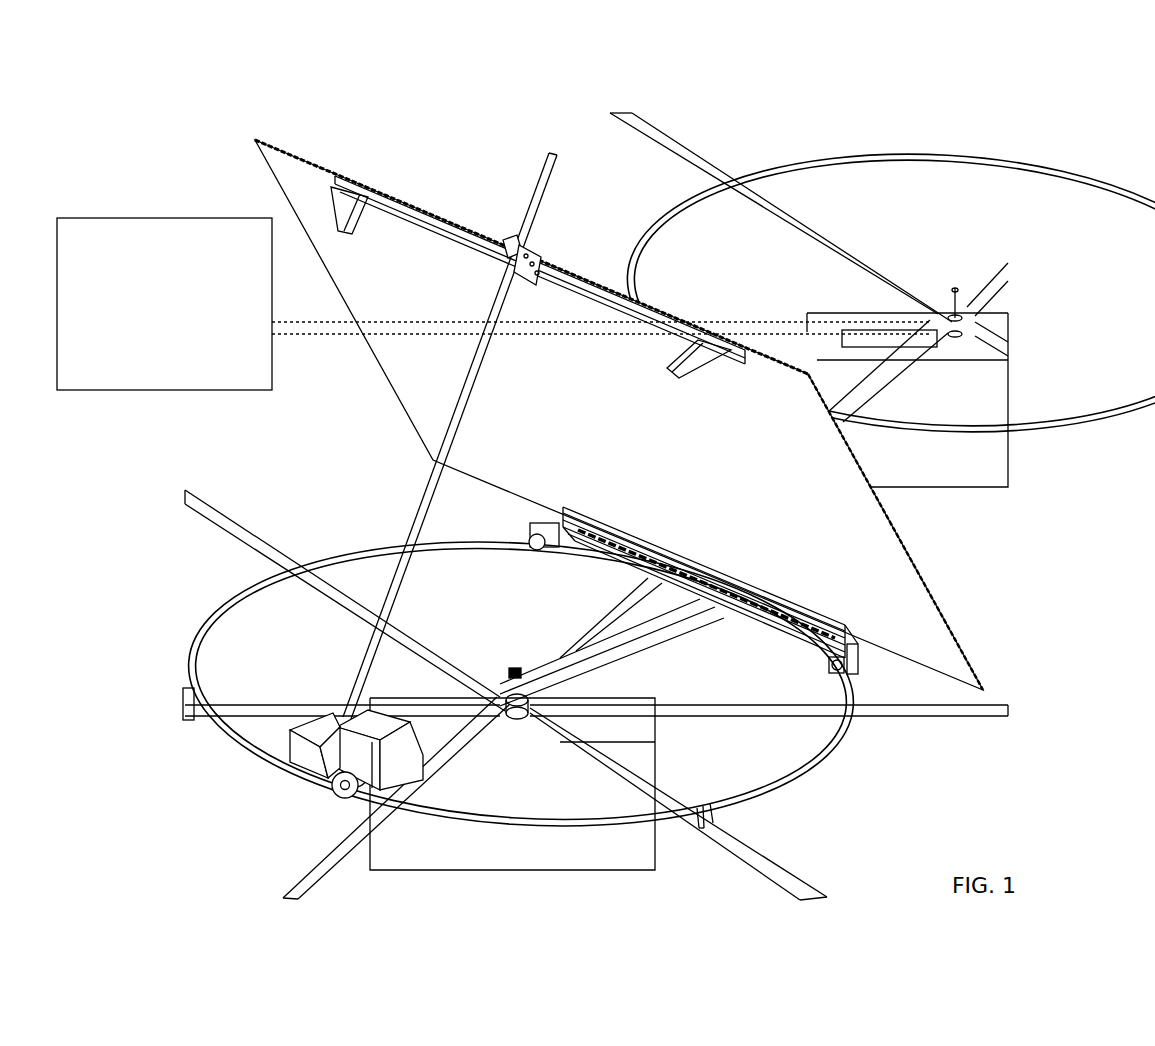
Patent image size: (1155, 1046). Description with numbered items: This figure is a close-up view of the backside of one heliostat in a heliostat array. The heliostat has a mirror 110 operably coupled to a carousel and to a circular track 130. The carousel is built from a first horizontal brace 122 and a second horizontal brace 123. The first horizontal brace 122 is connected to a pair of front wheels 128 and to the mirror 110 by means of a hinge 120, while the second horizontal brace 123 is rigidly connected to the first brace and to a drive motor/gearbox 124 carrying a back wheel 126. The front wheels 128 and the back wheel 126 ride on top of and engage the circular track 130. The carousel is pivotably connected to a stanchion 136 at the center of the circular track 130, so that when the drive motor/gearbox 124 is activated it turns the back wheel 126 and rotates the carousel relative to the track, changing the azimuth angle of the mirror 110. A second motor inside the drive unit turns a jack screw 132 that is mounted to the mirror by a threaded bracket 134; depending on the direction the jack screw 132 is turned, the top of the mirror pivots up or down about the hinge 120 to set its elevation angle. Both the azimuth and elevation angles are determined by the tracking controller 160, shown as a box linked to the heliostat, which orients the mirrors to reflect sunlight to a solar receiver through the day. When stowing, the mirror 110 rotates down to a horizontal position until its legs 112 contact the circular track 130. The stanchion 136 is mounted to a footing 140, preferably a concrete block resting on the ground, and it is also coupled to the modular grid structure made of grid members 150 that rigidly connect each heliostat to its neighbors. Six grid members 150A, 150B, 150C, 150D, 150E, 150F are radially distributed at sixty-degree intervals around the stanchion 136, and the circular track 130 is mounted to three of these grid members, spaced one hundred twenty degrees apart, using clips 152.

The mirror 110 is at (392, 297).
The legs 112 is at (335, 218).
The hinge 120 is at (810, 598).
The first horizontal brace 122 is at (762, 630).
The second horizontal brace 123 is at (603, 650).
The drive motor/gearbox 124 is at (313, 731).
The back wheel 126 is at (330, 793).
The front wheels 128 is at (522, 536).
The circular track 130 is at (227, 607).
The jack screw 132 is at (427, 483).
The threaded bracket 134 is at (500, 236).
The stanchion 136 is at (515, 658).
The footing 140 is at (443, 847).
The grid members 150 is at (757, 320).
The grid member 150A is at (297, 887).
The grid member 150B is at (243, 712).
The grid member 150C is at (212, 508).
The grid member 150D is at (625, 600).
The grid member 150E is at (740, 713).
The grid member 150F is at (757, 863).
The clips 152 is at (697, 812).
The tracking controller 160 is at (164, 304).